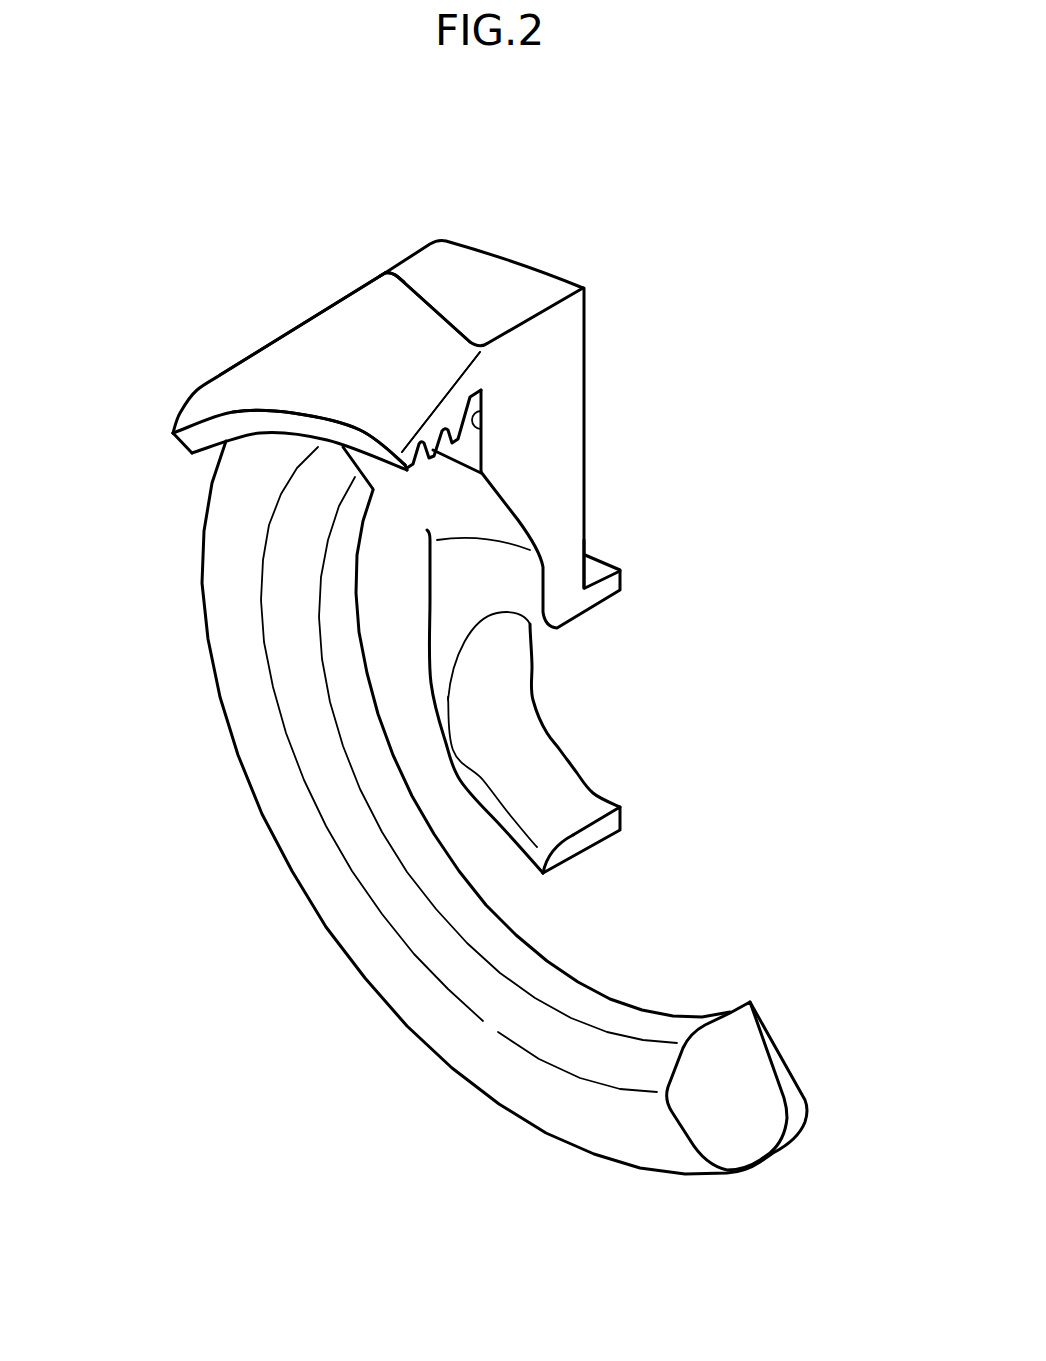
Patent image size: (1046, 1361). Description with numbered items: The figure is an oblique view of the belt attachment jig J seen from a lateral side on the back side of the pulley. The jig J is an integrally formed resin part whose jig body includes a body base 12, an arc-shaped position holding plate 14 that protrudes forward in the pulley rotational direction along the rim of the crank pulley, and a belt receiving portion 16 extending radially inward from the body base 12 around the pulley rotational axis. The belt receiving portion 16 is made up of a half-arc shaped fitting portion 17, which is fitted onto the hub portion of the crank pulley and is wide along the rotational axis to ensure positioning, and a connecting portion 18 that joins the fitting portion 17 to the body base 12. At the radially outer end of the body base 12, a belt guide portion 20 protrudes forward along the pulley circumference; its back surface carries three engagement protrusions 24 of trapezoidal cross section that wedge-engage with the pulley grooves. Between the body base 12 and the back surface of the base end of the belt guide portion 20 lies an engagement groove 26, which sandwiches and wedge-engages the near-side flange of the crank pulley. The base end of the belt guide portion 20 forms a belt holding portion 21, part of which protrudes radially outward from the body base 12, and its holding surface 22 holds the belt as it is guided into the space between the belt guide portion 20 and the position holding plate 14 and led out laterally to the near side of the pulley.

The belt attachment jig J is at (610, 188).
The body base 12 is at (557, 383).
The position holding plate 14 is at (220, 648).
The belt receiving portion 16 is at (697, 508).
The fitting portion 17 is at (525, 717).
The connecting portion 18 is at (573, 532).
The belt guide portion 20 is at (298, 325).
The belt holding portion 21 is at (395, 292).
The holding surface 22 is at (388, 376).
The engagement protrusions 24 is at (453, 444).
The engagement groove 26 is at (482, 431).